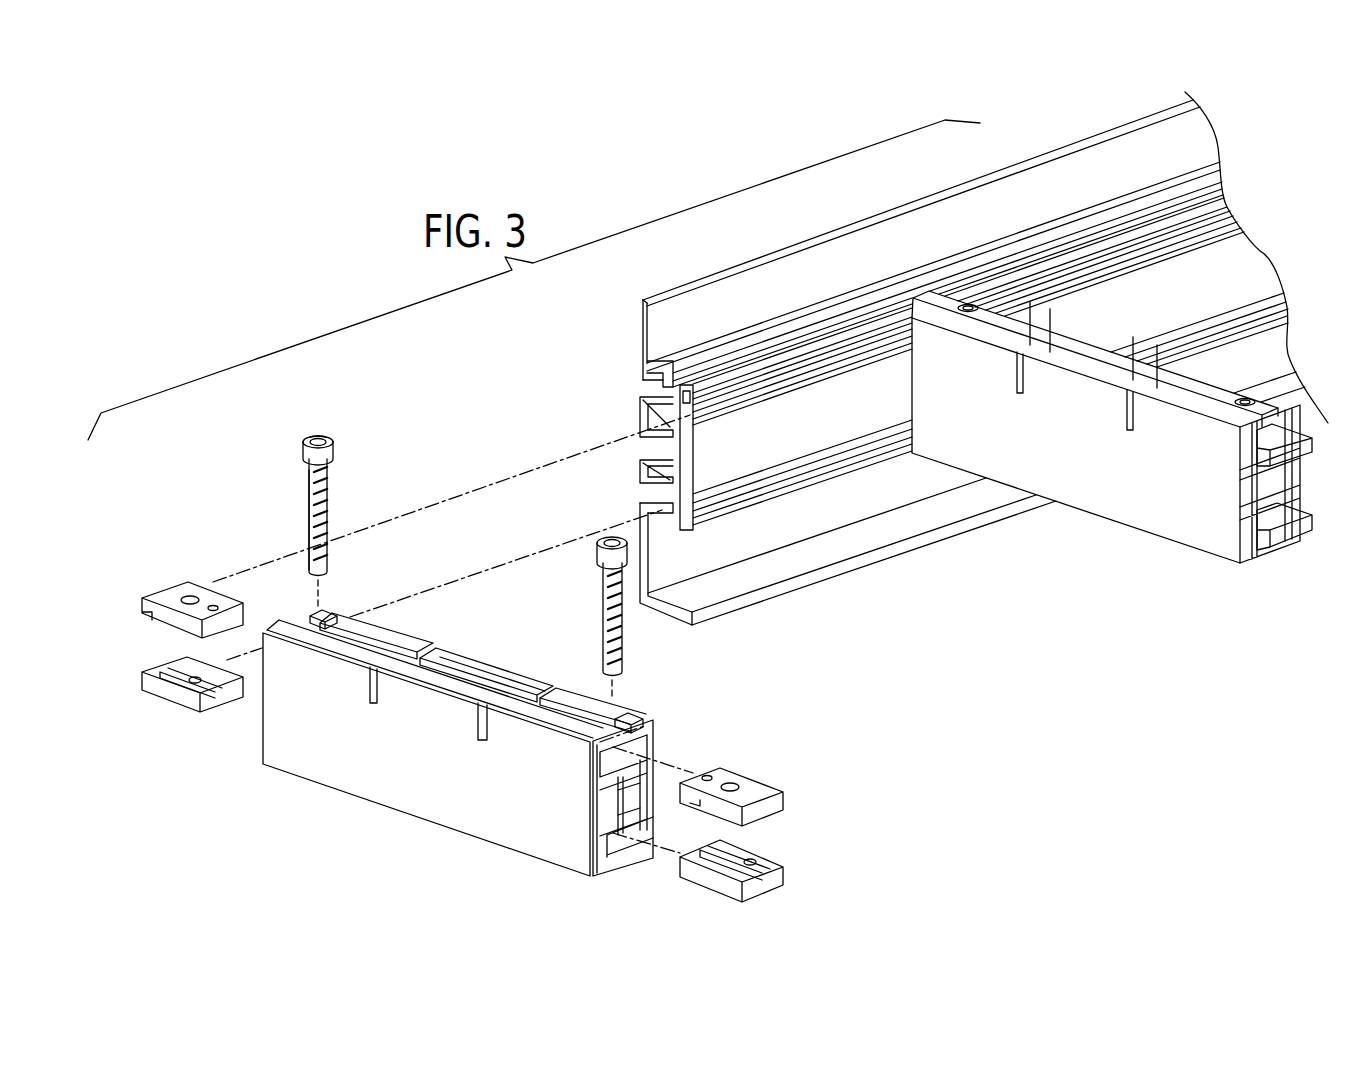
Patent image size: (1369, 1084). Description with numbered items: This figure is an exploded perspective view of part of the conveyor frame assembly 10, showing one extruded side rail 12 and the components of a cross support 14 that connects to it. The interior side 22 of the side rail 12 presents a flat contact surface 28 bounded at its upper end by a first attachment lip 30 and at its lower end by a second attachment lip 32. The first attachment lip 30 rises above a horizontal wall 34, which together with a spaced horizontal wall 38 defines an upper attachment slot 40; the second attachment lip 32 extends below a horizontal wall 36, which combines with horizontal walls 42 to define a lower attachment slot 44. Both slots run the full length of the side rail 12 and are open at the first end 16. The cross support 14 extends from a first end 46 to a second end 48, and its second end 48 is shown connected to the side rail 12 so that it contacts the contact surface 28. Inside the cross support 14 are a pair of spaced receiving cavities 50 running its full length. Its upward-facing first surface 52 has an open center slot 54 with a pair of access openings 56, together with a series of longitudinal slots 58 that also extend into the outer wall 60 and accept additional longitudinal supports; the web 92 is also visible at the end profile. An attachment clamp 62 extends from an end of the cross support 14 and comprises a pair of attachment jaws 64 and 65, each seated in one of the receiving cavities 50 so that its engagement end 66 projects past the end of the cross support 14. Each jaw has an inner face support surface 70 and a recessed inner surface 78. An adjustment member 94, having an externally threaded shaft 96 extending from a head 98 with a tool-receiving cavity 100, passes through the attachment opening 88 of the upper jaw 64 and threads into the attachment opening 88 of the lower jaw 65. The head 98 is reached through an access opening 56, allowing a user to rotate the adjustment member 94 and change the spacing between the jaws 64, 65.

The conveyor frame assembly 10 is at (926, 745).
The side rail 12 is at (915, 201).
The cross support 14 is at (1118, 513).
The first end 16 is at (643, 338).
The interior side 22 is at (857, 448).
The flat contact surface 28 is at (1257, 263).
The first attachment lip 30 is at (1240, 229).
The second attachment lip 32 is at (1270, 292).
The horizontal wall 34 is at (680, 442).
The horizontal wall 36 is at (672, 490).
The horizontal wall 38 is at (690, 388).
The upper attachment slot 40 is at (720, 412).
The horizontal walls 42 is at (698, 535).
The lower attachment slot 44 is at (740, 490).
The first end 46 is at (1237, 500).
The second end 48 is at (912, 386).
The receiving cavities 50 is at (645, 735).
The first surface 52 is at (490, 668).
The open center slot 54 is at (450, 665).
The access openings 56 is at (326, 616).
The longitudinal slots 58 is at (369, 686).
The outer wall 60 is at (560, 856).
The attachment clamp 62 is at (120, 600).
The attachment jaw 64 is at (148, 614).
The attachment jaw 65 is at (150, 690).
The engagement end 66 is at (1312, 448).
The inner face support surface 70 is at (738, 844).
The inner surface 78 is at (172, 598).
The attachment opening 88 is at (195, 596).
The web 92 is at (628, 780).
The adjustment member 94 is at (345, 489).
The externally threaded shaft 96 is at (309, 513).
The head 98 is at (304, 447).
The cavity 100 is at (321, 440).